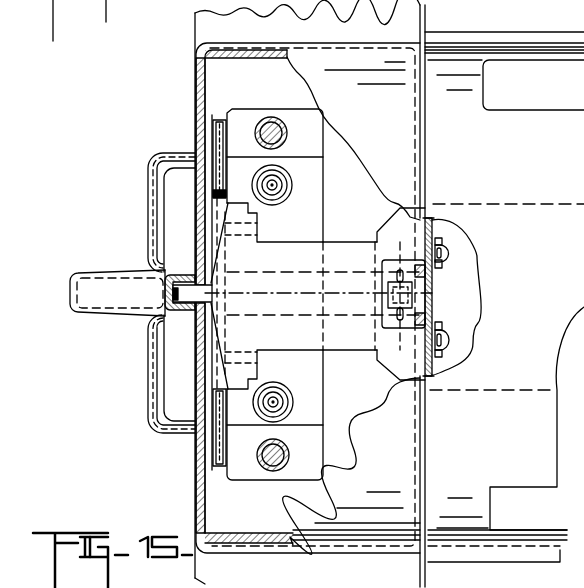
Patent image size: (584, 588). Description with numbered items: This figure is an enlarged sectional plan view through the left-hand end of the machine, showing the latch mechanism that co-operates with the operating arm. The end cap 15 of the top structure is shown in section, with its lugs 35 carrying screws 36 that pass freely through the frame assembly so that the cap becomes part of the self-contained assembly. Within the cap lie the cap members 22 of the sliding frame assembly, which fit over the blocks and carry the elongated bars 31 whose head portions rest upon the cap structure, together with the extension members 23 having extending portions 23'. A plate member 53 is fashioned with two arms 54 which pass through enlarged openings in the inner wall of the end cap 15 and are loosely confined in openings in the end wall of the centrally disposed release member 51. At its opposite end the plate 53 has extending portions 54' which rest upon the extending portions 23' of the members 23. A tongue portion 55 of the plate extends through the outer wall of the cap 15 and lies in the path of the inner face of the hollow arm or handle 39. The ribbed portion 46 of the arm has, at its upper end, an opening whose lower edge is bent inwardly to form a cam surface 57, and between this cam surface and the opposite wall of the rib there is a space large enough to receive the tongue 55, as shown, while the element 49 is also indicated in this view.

The end cap 15 is at (195, 100).
The cap member 22 is at (318, 175).
The extension member 23 is at (230, 427).
The extending portions 23' is at (233, 159).
The elongated bars 31 is at (292, 188).
The lugs 35 is at (275, 118).
The screws 36 is at (262, 125).
The arm or handle 39 is at (150, 218).
The ribbed portion 46 is at (72, 305).
The door panel 49 is at (537, 417).
The release member 51 is at (537, 298).
The plate member 53 is at (332, 250).
The arms 54 is at (453, 297).
The extending portions 54' is at (294, 296).
The tongue portion 55 is at (190, 288).
The cam surface 57 is at (193, 305).